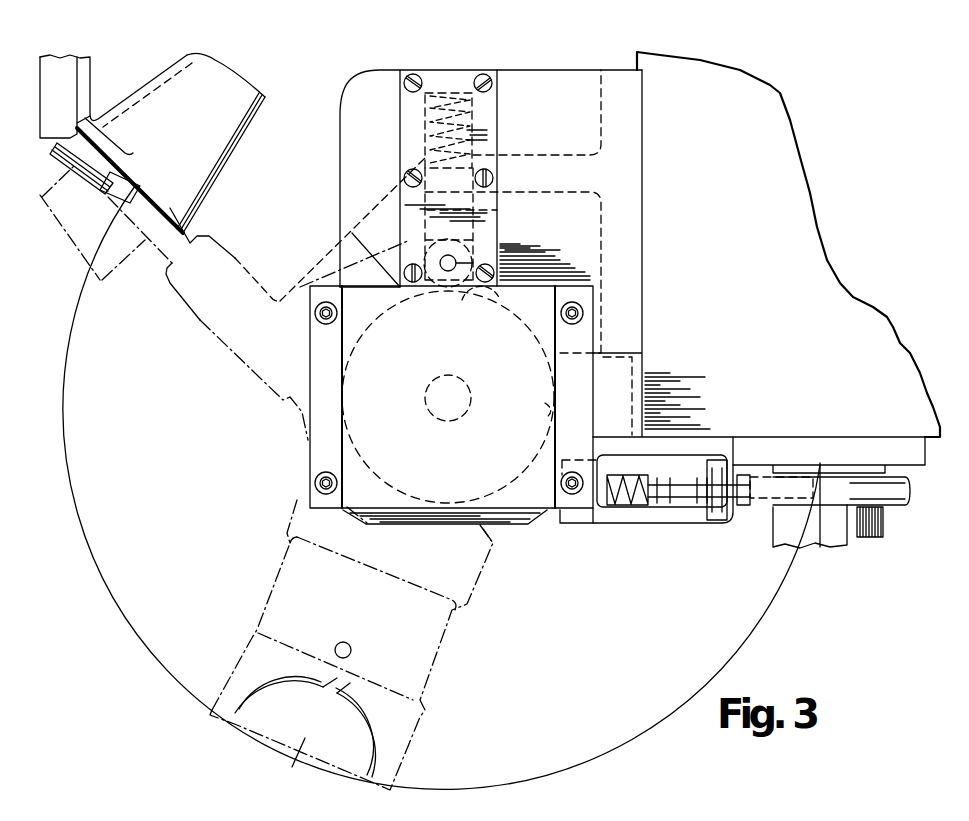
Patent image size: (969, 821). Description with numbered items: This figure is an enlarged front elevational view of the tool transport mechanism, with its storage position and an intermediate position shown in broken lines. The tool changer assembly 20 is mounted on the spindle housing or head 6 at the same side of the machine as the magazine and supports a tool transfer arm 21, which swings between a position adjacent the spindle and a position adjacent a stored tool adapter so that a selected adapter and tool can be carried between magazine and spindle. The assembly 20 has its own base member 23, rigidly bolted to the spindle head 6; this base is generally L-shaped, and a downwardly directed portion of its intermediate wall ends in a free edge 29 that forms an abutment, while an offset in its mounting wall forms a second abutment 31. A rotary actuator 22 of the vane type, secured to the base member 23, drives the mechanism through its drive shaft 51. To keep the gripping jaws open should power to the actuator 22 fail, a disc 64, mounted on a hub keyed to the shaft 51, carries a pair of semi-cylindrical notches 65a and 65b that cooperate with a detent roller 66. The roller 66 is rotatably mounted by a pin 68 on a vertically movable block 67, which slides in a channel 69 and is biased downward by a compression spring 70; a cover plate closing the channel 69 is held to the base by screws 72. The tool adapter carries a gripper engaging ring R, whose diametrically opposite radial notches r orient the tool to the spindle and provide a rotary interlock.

The spindle housing or head 6 is at (800, 165).
The tool changer assembly 20 is at (532, 535).
The tool transfer arm 21 is at (226, 347).
The actuator 22 is at (341, 444).
The base member 23 is at (647, 165).
The free edge 29 is at (343, 238).
The abutment 31 is at (640, 360).
The drive shaft 51 is at (428, 405).
The disc 64 is at (313, 471).
The semi-cylindrical notch 65a is at (477, 303).
The semi-cylindrical notch 65b is at (546, 413).
The detent roller 66 is at (470, 257).
The vertically movable block 67 is at (497, 211).
The pin 68 is at (497, 254).
The channel 69 is at (497, 132).
The compression spring 70 is at (483, 203).
The screws 72 is at (487, 80).
The gripper engaging ring R is at (912, 490).
The radial notches r is at (833, 505).